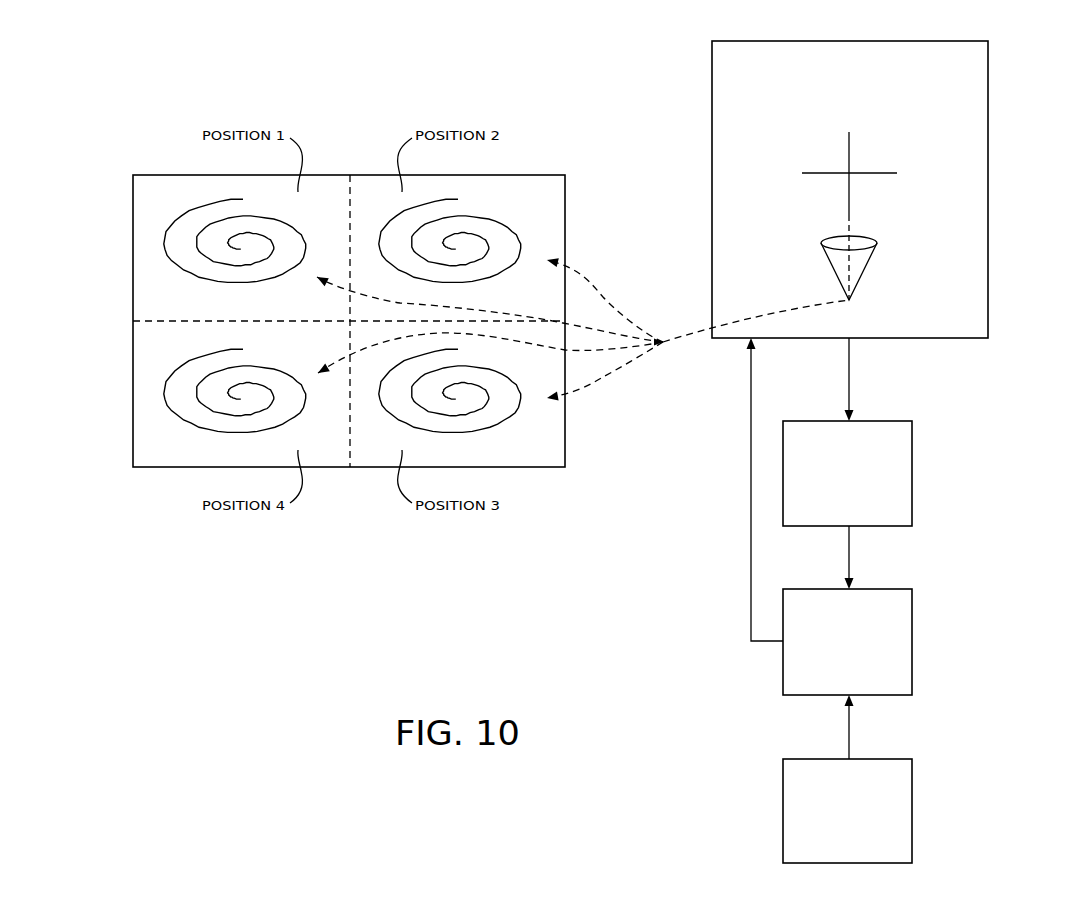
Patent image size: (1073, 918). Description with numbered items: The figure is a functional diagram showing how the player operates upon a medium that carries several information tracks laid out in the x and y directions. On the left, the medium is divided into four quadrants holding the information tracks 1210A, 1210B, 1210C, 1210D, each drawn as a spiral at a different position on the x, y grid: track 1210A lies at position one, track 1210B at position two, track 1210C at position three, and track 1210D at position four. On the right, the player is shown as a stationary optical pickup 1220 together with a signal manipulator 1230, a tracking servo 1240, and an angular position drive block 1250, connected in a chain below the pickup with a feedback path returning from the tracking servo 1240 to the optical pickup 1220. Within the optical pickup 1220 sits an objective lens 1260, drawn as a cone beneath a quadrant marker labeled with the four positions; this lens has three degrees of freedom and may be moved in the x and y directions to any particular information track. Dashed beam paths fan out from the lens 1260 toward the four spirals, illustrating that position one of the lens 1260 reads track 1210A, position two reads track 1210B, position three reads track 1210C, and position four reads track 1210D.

The information track 1210A is at (217, 207).
The information track 1210B is at (482, 218).
The information track 1210C is at (483, 432).
The information track 1210D is at (218, 432).
The stationary optical pickup 1220 is at (892, 180).
The signal manipulator 1230 is at (912, 421).
The tracking servo 1240 is at (912, 589).
The angular position drive block 1250 is at (912, 759).
The objective lens 1260 is at (947, 266).